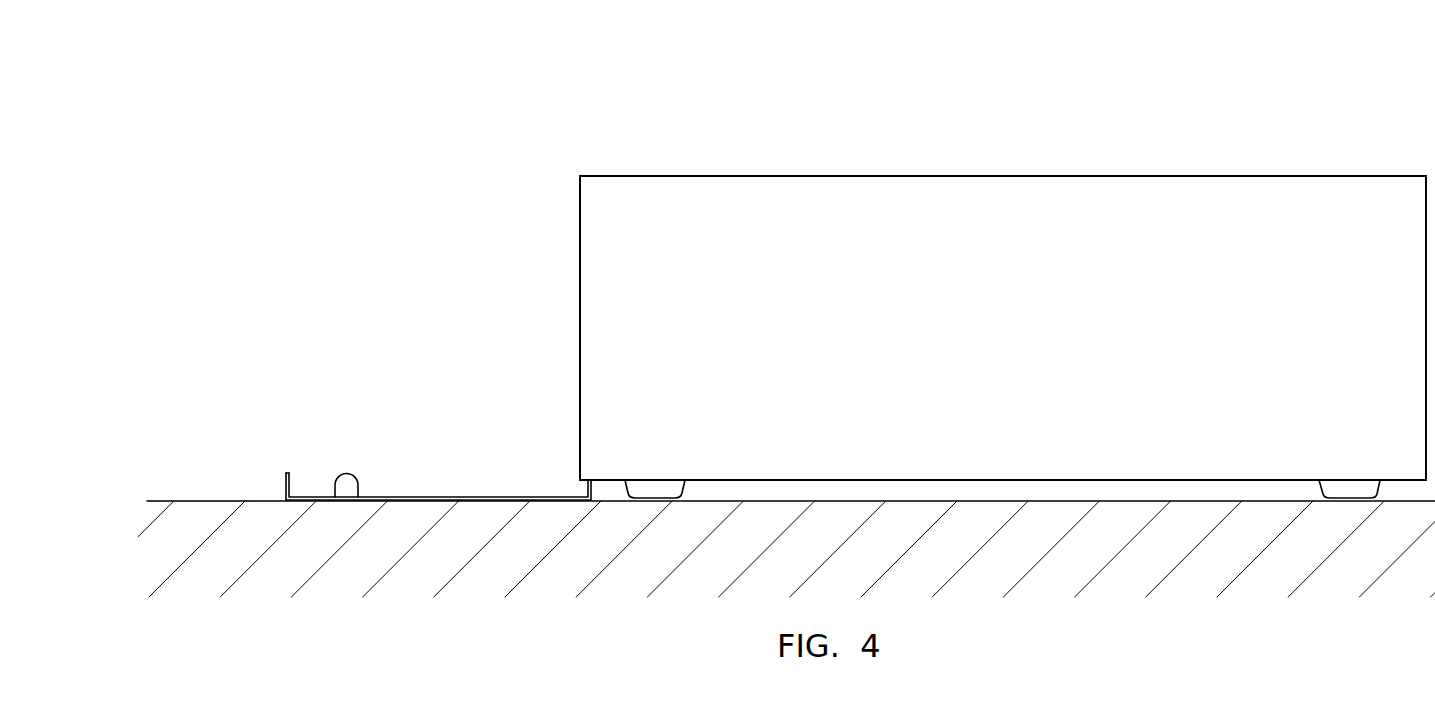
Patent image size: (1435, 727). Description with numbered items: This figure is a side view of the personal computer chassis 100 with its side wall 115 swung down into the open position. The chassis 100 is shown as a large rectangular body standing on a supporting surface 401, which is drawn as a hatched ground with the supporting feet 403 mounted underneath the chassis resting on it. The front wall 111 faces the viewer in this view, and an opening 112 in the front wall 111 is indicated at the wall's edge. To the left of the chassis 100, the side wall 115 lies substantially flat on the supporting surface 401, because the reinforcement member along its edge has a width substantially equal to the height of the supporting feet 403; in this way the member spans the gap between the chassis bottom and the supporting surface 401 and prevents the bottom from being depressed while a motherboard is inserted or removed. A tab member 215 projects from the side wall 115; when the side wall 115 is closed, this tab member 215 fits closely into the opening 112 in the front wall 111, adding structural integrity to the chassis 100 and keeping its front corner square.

The personal computer chassis 100 is at (1008, 133).
The front wall 111 is at (950, 345).
The opening 112 is at (584, 291).
The side wall 115 is at (550, 496).
The tab member 215 is at (352, 476).
The supporting surface 401 is at (985, 510).
The supporting feet 403 is at (649, 490).